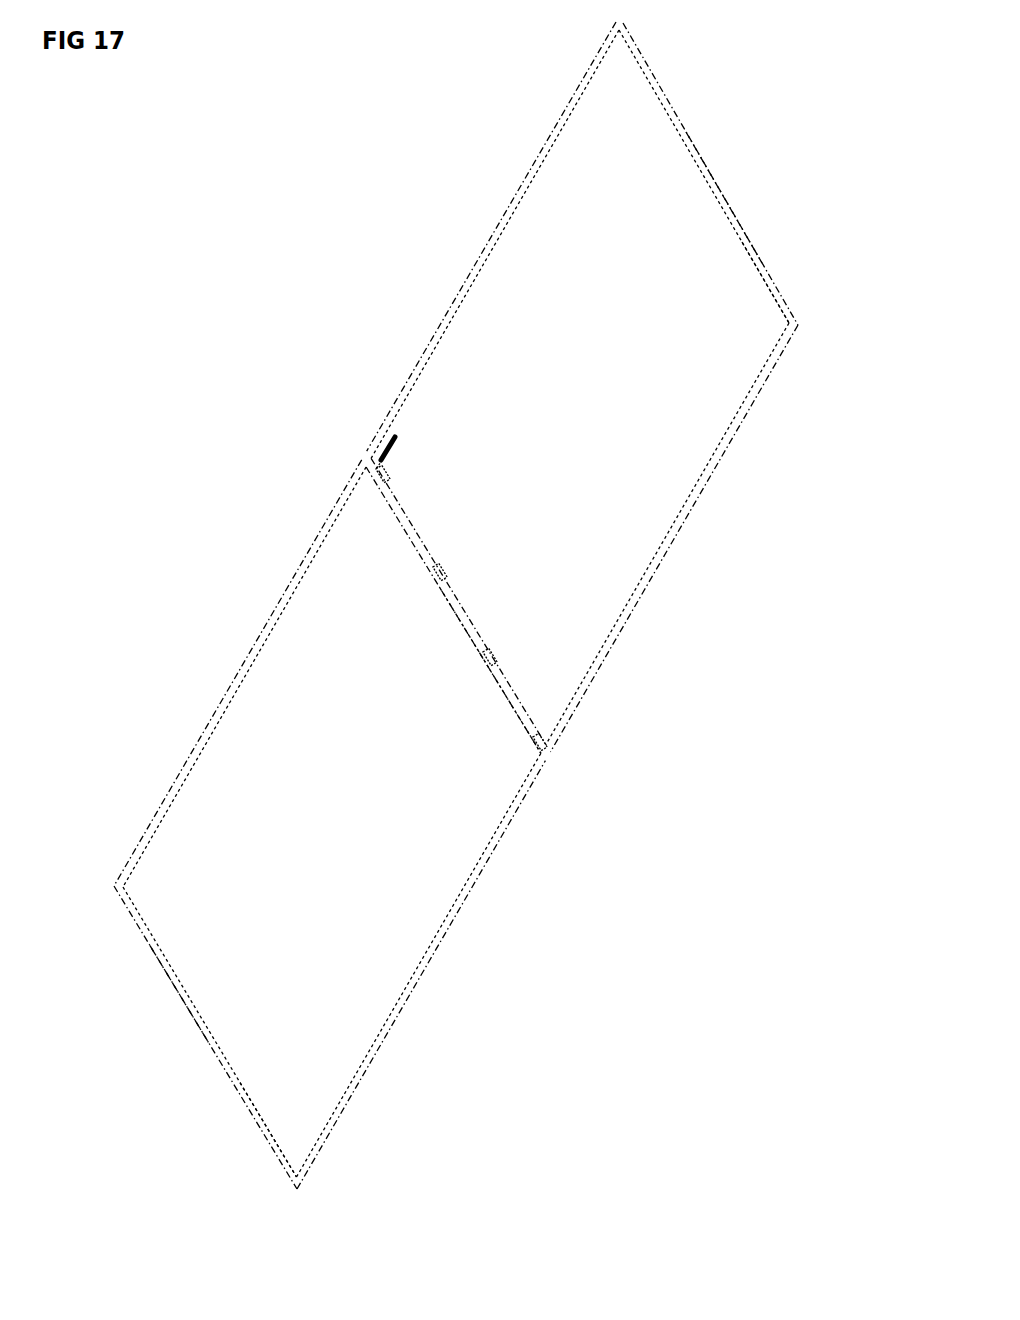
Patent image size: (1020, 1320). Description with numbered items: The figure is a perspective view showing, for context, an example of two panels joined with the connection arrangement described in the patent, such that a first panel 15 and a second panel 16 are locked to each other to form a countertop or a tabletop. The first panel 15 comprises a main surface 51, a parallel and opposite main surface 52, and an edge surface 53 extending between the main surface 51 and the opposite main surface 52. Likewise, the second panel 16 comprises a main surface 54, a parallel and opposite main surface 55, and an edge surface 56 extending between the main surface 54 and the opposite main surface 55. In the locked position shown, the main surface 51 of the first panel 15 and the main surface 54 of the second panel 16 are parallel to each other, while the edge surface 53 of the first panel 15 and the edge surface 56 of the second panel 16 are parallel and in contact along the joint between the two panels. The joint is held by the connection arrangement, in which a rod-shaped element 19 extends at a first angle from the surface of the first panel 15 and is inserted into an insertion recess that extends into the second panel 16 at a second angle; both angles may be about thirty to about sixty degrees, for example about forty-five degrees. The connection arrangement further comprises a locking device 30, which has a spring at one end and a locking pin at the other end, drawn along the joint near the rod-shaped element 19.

The first panel 15 is at (438, 226).
The second panel 16 is at (240, 592).
The rod-shaped element 19 is at (385, 483).
The locking device 30 is at (372, 440).
The main surface 51 is at (695, 230).
The opposite main surface 52 is at (760, 258).
The edge surface 53 is at (498, 678).
The main surface 54 is at (195, 978).
The opposite main surface 55 is at (267, 1130).
The edge surface 56 is at (505, 698).